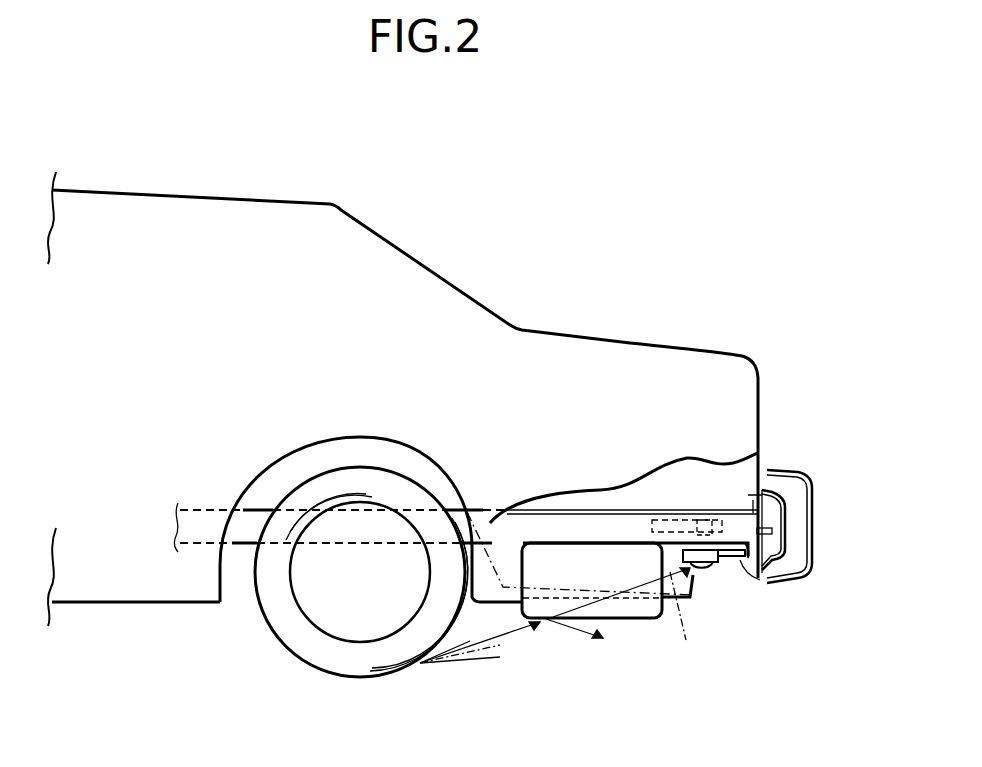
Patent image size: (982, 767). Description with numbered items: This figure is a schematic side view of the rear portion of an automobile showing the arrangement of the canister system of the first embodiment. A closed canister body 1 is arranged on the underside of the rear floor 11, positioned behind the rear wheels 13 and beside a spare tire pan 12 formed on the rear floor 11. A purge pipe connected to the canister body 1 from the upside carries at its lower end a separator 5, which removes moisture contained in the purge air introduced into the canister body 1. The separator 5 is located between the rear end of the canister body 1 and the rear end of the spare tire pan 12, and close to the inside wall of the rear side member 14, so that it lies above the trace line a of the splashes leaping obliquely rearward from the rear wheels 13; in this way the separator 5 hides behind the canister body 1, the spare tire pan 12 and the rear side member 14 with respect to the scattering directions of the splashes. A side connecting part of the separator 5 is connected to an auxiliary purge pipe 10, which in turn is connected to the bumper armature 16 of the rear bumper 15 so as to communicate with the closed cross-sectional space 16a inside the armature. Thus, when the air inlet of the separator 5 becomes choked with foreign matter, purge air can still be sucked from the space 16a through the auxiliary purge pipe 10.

The canister body 1 is at (650, 620).
The separator 5 is at (718, 567).
The auxiliary purge pipe 10 is at (742, 562).
The rear floor 11 is at (653, 510).
The spare tire pan 12 is at (700, 567).
The rear wheels 13 is at (297, 660).
The rear side member 14 is at (586, 523).
The rear bumper 15 is at (787, 472).
The bumper armature 16 is at (776, 505).
The closed cross-sectional space 16a is at (773, 522).
The trace line a is at (683, 620).